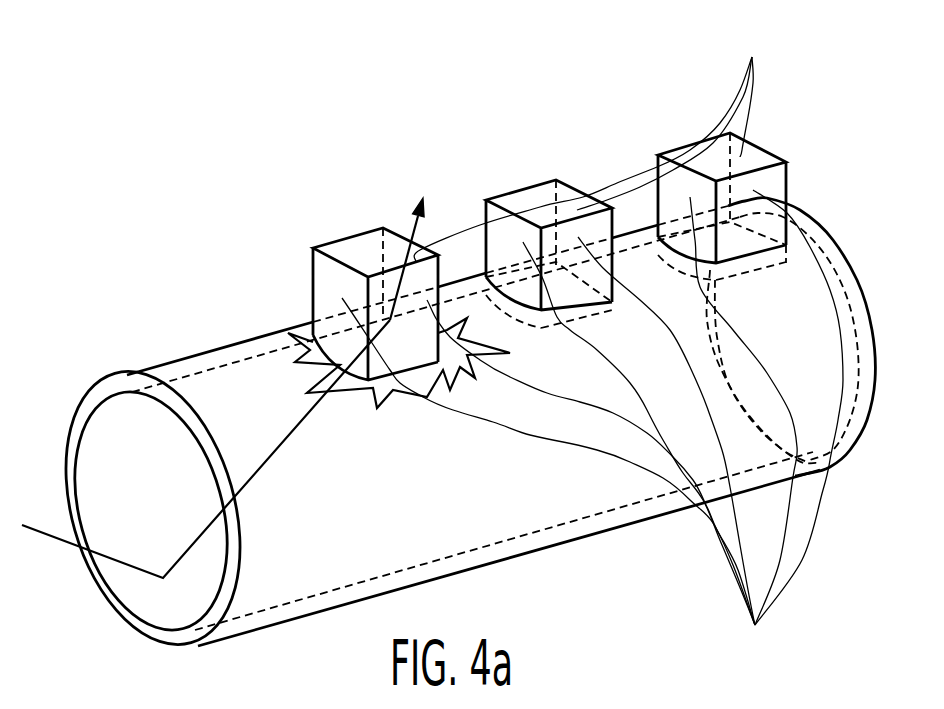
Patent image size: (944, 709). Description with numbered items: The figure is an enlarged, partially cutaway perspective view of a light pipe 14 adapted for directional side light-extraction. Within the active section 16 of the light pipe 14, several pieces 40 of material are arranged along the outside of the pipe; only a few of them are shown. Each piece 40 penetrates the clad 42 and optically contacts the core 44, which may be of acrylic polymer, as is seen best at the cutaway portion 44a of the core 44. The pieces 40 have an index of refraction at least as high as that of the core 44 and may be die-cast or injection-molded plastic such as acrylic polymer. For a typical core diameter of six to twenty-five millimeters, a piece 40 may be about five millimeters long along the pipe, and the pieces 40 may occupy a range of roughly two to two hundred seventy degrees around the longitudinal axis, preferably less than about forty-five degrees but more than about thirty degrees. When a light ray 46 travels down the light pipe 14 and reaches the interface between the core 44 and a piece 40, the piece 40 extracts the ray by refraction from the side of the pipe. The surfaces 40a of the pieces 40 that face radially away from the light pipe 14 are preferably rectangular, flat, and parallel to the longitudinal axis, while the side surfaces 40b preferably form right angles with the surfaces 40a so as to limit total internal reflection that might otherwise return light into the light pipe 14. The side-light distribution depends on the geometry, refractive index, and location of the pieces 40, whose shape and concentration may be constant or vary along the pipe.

The light pipe 14 is at (316, 146).
The active section 16 is at (679, 84).
The pieces of material 40 is at (686, 136).
The surfaces facing radially away from the light pipe 40a is at (592, 144).
The side surfaces of the pieces 40b is at (592, 426).
The clad 42 is at (100, 387).
The core 44 is at (140, 508).
The cutaway portion of the core 44a is at (398, 397).
The light ray 46 is at (285, 442).